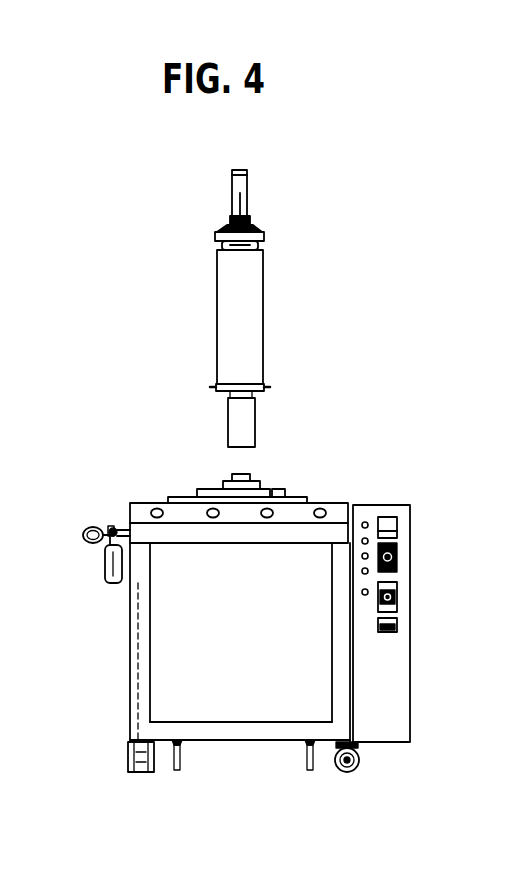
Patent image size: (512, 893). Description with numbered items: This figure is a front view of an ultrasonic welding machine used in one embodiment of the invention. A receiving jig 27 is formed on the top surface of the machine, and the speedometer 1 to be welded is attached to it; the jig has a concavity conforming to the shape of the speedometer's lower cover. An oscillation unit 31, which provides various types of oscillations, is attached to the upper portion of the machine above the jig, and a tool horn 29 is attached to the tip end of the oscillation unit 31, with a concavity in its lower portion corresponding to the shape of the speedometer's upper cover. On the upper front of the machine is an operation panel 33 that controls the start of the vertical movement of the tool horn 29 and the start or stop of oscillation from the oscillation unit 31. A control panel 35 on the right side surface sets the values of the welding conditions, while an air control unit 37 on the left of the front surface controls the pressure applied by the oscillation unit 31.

The speedometer 1 is at (250, 476).
The receiving jig 27 is at (278, 488).
The tool horn 29 is at (245, 413).
The oscillation unit 31 is at (252, 287).
The operation panel 33 is at (135, 508).
The control panel 35 is at (395, 663).
The air control unit 37 is at (102, 567).